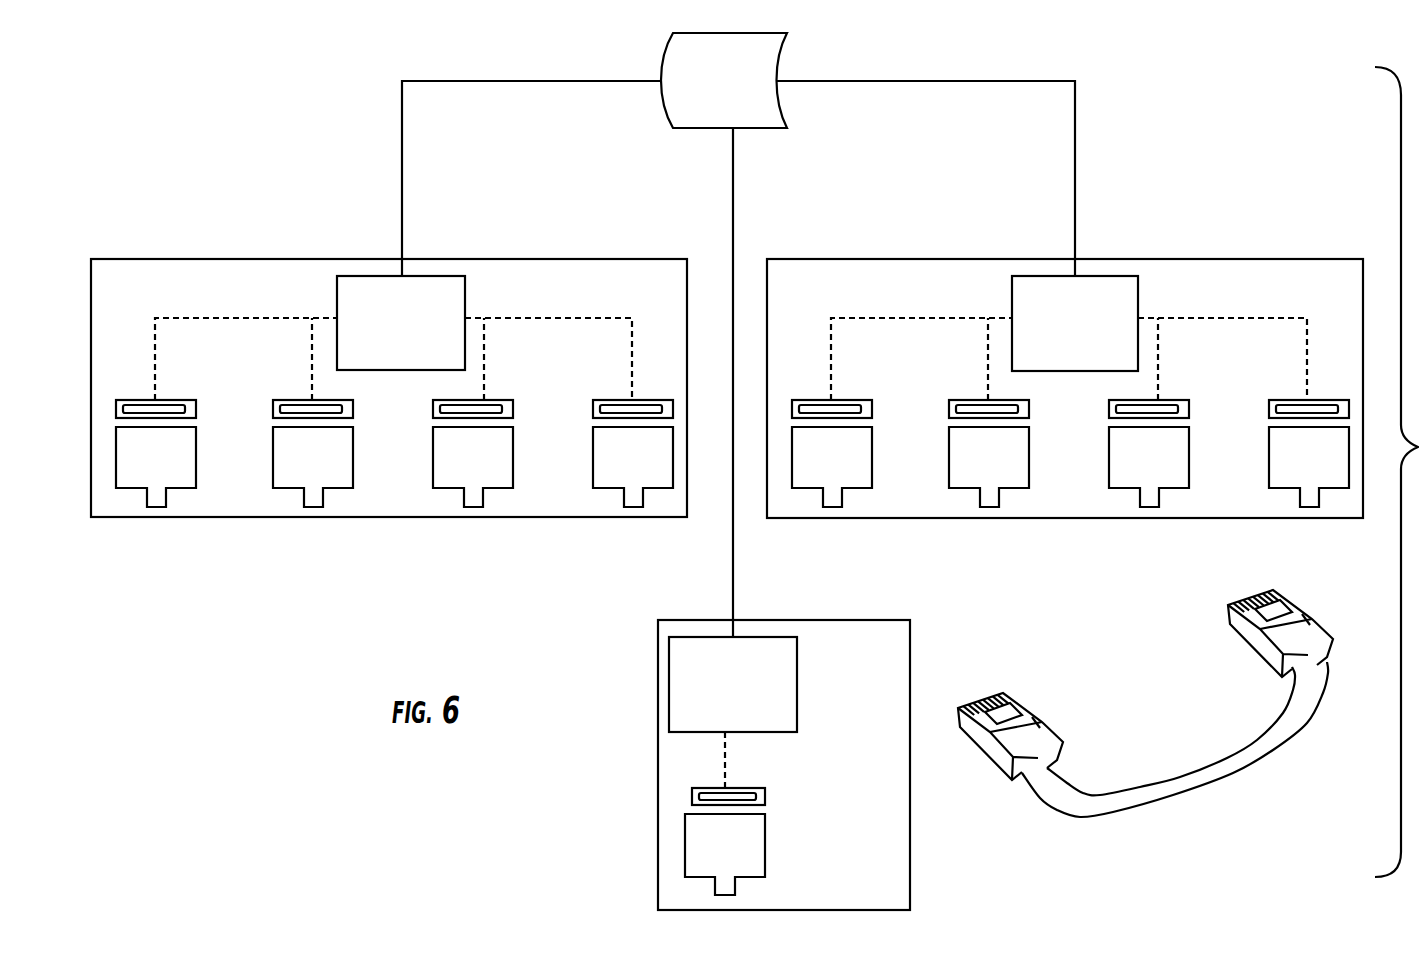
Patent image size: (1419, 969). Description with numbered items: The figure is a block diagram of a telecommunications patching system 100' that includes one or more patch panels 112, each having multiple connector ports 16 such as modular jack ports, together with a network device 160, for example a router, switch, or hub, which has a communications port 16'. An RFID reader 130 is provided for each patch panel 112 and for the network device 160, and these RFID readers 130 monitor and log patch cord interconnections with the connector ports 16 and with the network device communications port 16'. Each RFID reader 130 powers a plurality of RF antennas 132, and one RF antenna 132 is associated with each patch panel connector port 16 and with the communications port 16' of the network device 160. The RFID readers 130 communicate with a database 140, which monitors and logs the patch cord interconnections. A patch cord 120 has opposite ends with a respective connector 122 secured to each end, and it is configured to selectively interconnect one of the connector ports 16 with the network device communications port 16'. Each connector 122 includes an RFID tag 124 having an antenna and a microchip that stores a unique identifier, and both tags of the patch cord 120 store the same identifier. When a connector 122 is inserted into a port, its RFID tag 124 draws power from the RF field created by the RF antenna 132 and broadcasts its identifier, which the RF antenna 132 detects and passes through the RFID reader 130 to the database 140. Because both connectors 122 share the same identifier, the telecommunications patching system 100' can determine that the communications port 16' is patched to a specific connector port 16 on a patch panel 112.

The telecommunications patching system 100' is at (910, 472).
The database 140 is at (738, 111).
The patch panel 112 is at (620, 258).
The RFID reader 130 is at (418, 367).
The RF antenna 132 is at (177, 398).
The connector port 16 is at (732, 466).
The communications port 16' is at (687, 858).
The network device 160 is at (870, 847).
The patch cord 120 is at (1227, 768).
The connector 122 is at (1052, 730).
The RFID tag 124 is at (983, 697).